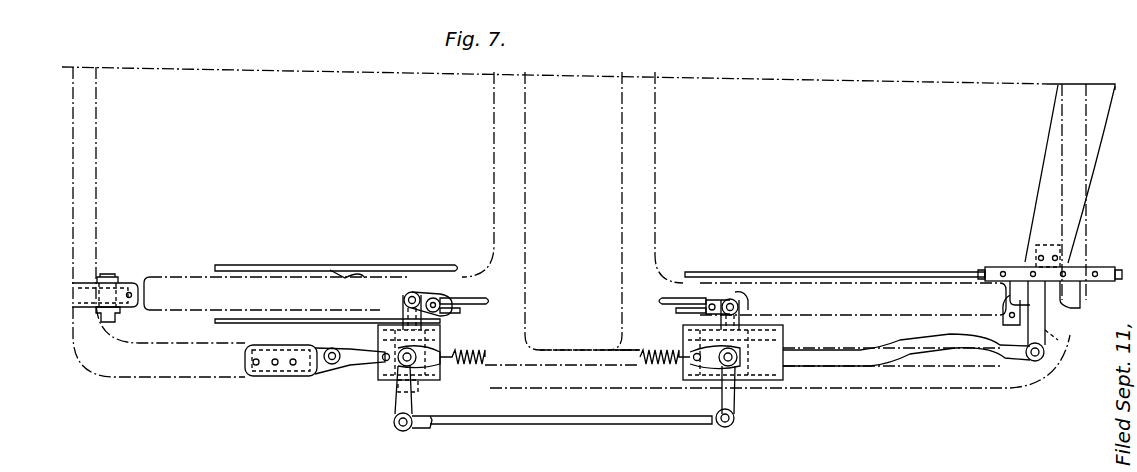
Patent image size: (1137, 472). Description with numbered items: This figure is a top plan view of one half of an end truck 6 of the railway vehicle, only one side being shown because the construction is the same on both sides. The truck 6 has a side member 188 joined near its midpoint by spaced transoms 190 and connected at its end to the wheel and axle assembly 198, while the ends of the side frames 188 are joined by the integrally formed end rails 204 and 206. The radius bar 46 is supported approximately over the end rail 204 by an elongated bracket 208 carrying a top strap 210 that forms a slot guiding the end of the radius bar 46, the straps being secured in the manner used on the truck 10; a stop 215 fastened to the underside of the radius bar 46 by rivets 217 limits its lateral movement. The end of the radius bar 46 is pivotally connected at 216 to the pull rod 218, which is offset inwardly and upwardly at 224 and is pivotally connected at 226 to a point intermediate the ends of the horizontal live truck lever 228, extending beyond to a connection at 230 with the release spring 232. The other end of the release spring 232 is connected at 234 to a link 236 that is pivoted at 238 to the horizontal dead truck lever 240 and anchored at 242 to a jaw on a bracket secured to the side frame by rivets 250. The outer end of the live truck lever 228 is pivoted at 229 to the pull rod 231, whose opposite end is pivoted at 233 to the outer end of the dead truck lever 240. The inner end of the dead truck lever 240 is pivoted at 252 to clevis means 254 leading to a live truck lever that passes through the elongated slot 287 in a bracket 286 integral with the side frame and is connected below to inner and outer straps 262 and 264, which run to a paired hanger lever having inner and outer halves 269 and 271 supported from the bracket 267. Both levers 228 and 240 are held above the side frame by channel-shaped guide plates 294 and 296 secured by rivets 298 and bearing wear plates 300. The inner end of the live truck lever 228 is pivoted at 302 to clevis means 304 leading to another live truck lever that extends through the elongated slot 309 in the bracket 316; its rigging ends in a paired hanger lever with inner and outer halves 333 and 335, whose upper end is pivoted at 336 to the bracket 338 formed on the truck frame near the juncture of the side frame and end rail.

The truck 6 is at (1097, 331).
The truck 10 is at (582, 67).
The radius bar 46 is at (1058, 105).
The side member 188 is at (905, 384).
The spaced transoms 190 is at (500, 185).
The wheel and axle assembly 198 is at (876, 280).
The end rail 204 is at (1080, 240).
The end rail 206 is at (78, 140).
The bracket 208 is at (1080, 292).
The top strap 210 is at (1094, 266).
The stop means 215 is at (1045, 245).
The pivotal connection 216 is at (1034, 360).
The rivets 217 is at (1040, 250).
The pull rod 218 is at (1012, 368).
The offset 224 is at (968, 366).
The pivotal connection 226 is at (742, 364).
The horizontal live truck lever 228 is at (738, 402).
The pivotal connection 229 is at (722, 423).
The connection 230 is at (694, 362).
The pull rod 231 is at (530, 424).
The release spring 232 is at (648, 350).
The pivotal connection 233 is at (402, 426).
The connection 234 is at (462, 366).
The link 236 is at (350, 362).
The pivotal connection 238 is at (398, 354).
The horizontal dead truck lever 240 is at (396, 400).
The pivotal anchor 242 is at (332, 348).
The rivets 250 is at (256, 366).
The pivotal connection 252 is at (414, 294).
The clevis means 254 is at (436, 298).
The inner strap 262 is at (262, 265).
The outer strap 264 is at (270, 319).
The bracket 267 is at (132, 284).
The inner half 269 is at (110, 278).
The outer half 271 is at (118, 316).
The bracket 286 is at (410, 292).
The elongated slot 287 is at (492, 301).
The channel-shaped guide plate 294 is at (783, 378).
The channel-shaped guide plate 296 is at (440, 342).
The rivets 298 is at (442, 362).
The wear plates 300 is at (420, 392).
The pivotal connection 302 is at (742, 303).
The clevis means 304 is at (716, 300).
The elongated slot 309 is at (672, 296).
The bracket 316 is at (740, 296).
The inner half 333 is at (1015, 278).
The outer half 335 is at (1058, 348).
The pivotal connection 336 is at (1003, 314).
The bracket 338 is at (1060, 335).